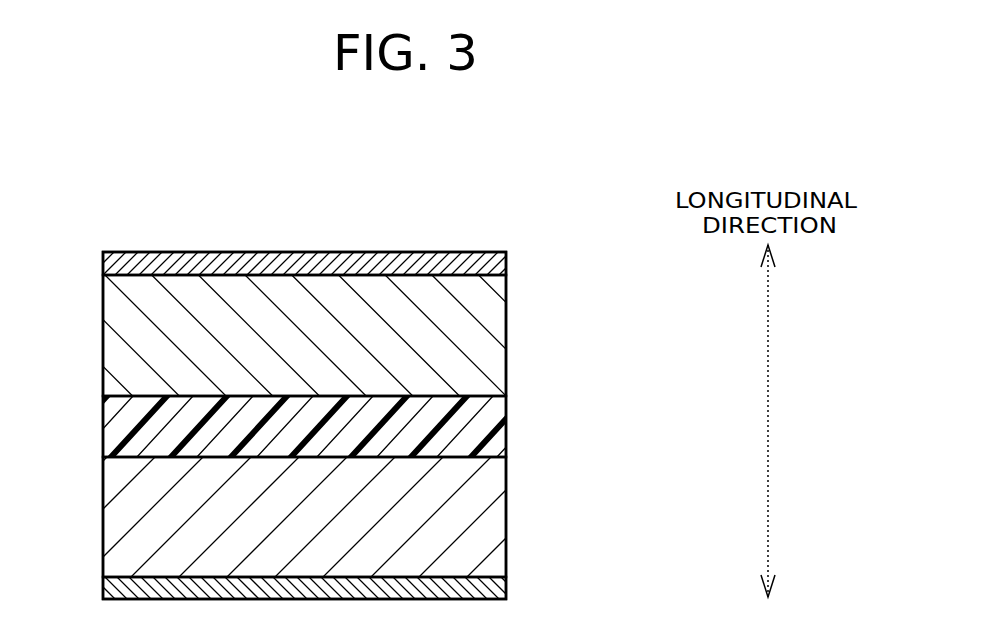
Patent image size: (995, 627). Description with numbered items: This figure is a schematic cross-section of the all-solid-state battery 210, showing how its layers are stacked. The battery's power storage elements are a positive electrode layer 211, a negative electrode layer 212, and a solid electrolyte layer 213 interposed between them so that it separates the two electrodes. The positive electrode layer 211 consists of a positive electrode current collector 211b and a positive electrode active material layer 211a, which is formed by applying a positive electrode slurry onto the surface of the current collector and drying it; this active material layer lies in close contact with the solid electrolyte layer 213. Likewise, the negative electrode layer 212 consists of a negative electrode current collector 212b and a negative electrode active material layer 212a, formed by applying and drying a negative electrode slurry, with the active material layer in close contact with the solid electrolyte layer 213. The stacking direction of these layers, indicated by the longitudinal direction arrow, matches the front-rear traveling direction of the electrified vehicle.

The all-solid-state battery 210 is at (87, 200).
The positive electrode layer 211 is at (633, 253).
The positive electrode active material layer 211a is at (507, 333).
The positive electrode current collector 211b is at (507, 264).
The negative electrode layer 212 is at (633, 508).
The negative electrode active material layer 212a is at (507, 515).
The negative electrode current collector 212b is at (507, 587).
The solid electrolyte layer 213 is at (507, 426).